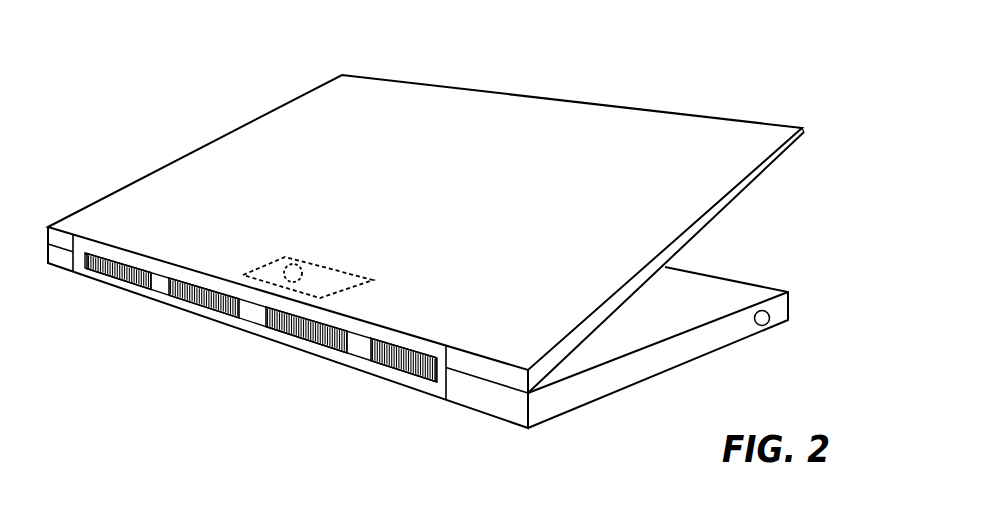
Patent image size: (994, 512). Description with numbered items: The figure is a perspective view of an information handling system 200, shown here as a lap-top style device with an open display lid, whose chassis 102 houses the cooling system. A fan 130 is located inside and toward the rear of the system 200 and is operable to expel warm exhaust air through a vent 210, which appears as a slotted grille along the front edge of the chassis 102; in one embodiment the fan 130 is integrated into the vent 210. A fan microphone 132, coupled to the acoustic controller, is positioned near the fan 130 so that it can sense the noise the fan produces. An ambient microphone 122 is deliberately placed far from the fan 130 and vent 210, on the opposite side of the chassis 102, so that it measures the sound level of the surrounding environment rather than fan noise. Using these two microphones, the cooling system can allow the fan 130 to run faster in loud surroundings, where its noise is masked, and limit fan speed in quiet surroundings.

The information handling system 200 is at (747, 72).
The chassis 102 is at (172, 386).
The vent 210 is at (305, 337).
The fan 130 is at (270, 262).
The fan microphone 132 is at (302, 276).
The ambient microphone 122 is at (771, 313).